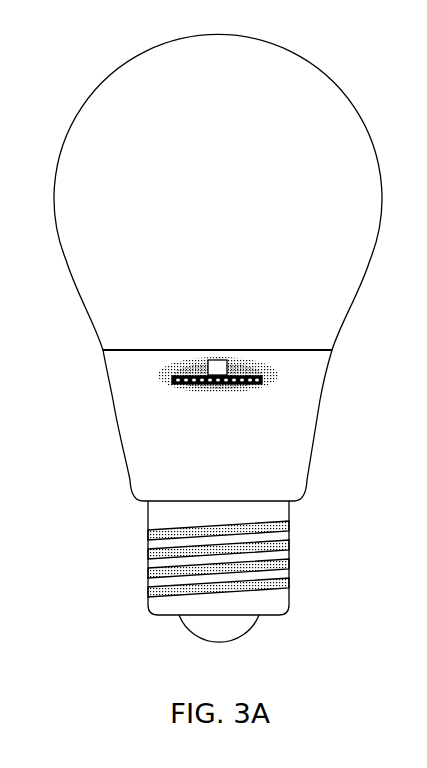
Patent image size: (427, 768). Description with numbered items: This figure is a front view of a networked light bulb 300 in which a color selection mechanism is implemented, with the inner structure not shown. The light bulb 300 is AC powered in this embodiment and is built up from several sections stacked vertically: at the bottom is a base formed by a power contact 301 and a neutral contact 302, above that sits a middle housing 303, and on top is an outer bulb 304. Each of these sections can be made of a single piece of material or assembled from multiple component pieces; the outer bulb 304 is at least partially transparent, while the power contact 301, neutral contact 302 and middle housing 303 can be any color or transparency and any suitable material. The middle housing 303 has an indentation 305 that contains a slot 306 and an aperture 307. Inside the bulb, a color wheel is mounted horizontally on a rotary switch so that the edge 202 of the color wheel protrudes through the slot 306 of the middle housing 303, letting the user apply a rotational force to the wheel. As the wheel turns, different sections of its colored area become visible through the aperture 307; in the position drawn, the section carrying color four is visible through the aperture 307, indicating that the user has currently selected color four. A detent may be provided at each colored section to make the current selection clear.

The networked light bulb 300 is at (328, 53).
The outer bulb 304 is at (362, 117).
The indentation 305 is at (291, 364).
The slot 306 is at (163, 388).
The edge of the color wheel 202 is at (262, 380).
The aperture 307 is at (208, 369).
The middle housing 303 is at (307, 477).
The neutral contact 302 is at (290, 597).
The power contact 301 is at (230, 643).